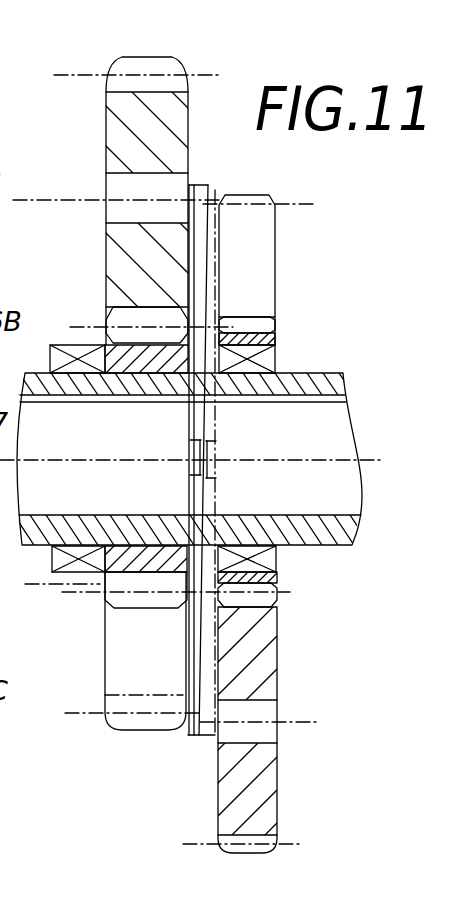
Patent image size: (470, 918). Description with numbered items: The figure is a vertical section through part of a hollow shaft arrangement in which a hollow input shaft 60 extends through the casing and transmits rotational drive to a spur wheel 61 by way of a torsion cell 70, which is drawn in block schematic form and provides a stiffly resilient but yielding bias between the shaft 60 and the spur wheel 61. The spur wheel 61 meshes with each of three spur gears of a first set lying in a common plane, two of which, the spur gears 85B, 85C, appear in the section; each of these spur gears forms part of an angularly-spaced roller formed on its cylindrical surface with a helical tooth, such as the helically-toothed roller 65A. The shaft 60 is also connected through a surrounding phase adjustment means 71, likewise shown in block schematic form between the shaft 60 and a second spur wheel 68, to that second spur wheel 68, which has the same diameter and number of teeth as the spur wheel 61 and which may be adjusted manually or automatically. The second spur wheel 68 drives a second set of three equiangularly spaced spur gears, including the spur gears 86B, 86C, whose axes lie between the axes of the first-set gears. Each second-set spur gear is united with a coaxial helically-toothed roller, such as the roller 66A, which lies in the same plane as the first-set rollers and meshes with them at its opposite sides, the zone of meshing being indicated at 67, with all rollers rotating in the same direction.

The hollow input shaft 60 is at (320, 533).
The spur wheel 61 is at (123, 560).
The helically-toothed roller 65A is at (197, 736).
The helically-toothed roller 66A is at (206, 187).
The zone of meshing 67 is at (218, 453).
The second spur wheel 68 is at (270, 340).
The torsion cell 70 is at (73, 350).
The phase adjustment means 71 is at (268, 358).
The spur gear 85B is at (173, 157).
The spur gear 85C is at (122, 665).
The spur gear 86B is at (258, 275).
The spur gear 86C is at (267, 663).